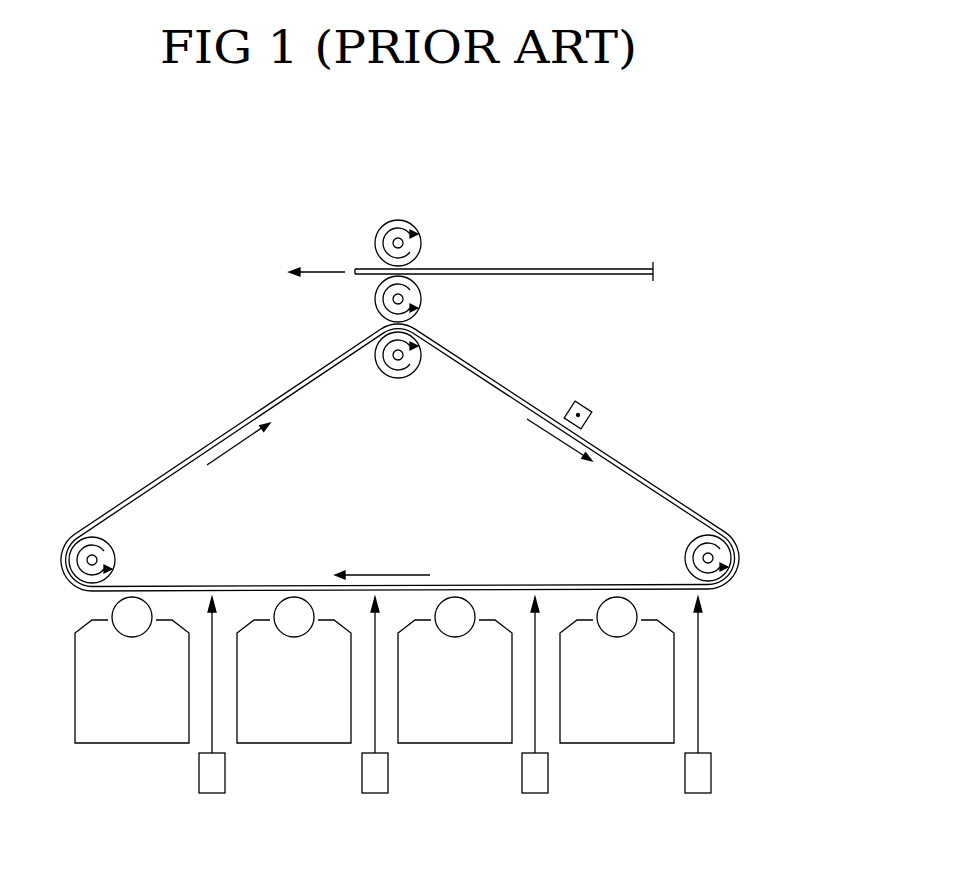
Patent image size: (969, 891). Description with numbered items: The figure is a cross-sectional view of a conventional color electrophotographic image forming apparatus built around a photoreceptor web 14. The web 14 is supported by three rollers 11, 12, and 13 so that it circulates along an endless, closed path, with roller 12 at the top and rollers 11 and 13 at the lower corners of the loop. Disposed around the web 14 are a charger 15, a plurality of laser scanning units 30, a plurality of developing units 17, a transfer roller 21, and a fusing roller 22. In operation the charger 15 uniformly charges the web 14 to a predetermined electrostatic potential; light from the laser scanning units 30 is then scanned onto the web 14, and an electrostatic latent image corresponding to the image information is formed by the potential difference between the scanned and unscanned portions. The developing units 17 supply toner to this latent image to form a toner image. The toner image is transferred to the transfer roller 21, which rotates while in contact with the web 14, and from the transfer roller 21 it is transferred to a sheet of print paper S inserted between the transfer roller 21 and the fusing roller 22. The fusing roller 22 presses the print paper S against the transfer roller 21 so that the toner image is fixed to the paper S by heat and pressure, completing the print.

The roller 11 is at (114, 552).
The roller 12 is at (398, 378).
The roller 13 is at (689, 550).
The photoreceptor web 14 is at (668, 490).
The charger 15 is at (592, 400).
The developing unit 17 is at (125, 743).
The transfer roller 21 is at (375, 299).
The fusing roller 22 is at (375, 242).
The laser scanning unit 30 is at (212, 793).
The print paper S is at (572, 268).